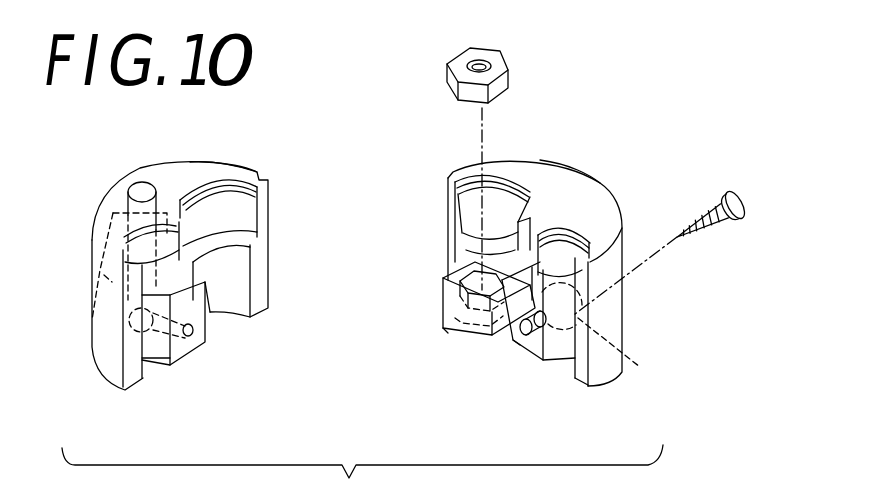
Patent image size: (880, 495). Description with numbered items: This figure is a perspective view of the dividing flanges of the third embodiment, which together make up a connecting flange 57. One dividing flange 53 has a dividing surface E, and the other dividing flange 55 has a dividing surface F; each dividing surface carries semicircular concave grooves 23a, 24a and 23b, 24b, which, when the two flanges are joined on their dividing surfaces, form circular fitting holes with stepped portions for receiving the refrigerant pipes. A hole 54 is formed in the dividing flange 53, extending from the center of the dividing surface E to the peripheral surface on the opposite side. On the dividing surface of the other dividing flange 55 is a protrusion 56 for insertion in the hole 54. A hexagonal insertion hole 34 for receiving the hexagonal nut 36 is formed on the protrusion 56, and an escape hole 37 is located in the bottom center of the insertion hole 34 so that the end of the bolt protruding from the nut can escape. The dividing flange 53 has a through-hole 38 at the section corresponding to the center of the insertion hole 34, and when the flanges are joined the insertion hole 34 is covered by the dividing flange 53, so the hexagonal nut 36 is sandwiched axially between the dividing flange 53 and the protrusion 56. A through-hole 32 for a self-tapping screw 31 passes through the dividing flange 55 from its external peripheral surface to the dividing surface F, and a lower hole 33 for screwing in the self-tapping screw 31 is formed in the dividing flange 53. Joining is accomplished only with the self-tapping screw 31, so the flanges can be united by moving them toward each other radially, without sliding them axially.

The dividing surface E is at (250, 293).
The dividing surface F is at (527, 343).
The connecting flange 57 is at (595, 118).
The dividing flange 53 is at (190, 162).
The dividing flange 55 is at (600, 180).
The through-hole 38 is at (145, 185).
The hole 54 is at (91, 318).
The semicircular concave groove 24a is at (217, 312).
The semicircular concave groove 24b is at (508, 200).
The semicircular concave groove 23a is at (158, 360).
The semicircular concave groove 23b is at (558, 350).
The lower hole 33 is at (190, 334).
The insertion hole 34 is at (470, 283).
The escape hole 37 is at (485, 338).
The protrusion 56 is at (462, 337).
The through-hole 32 is at (599, 322).
The self-tapping screw 31 is at (738, 190).
The hexagonal nut 36 is at (505, 57).